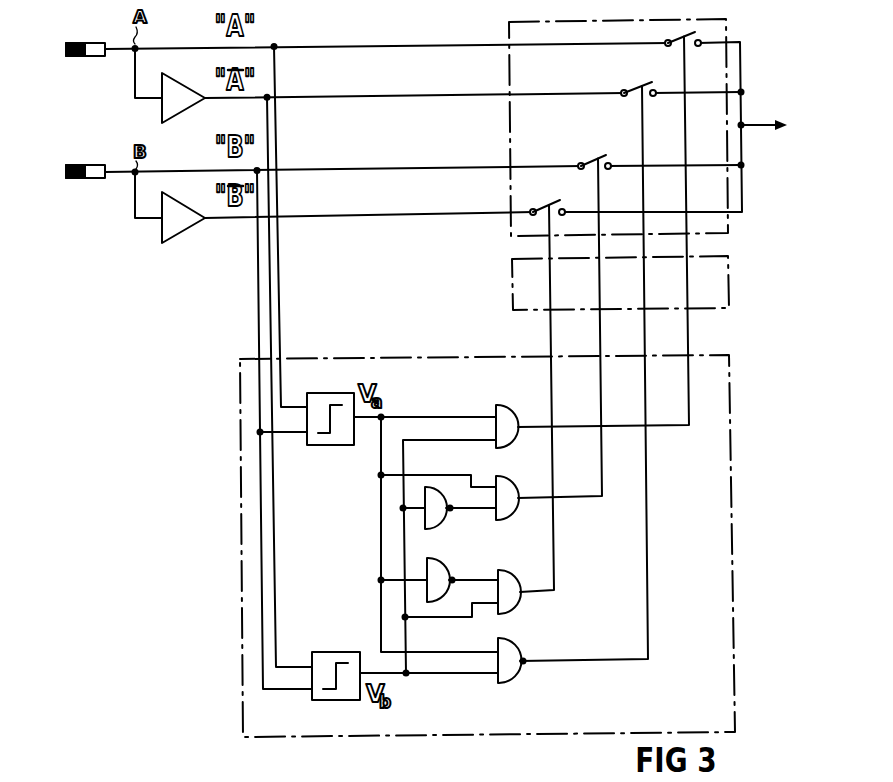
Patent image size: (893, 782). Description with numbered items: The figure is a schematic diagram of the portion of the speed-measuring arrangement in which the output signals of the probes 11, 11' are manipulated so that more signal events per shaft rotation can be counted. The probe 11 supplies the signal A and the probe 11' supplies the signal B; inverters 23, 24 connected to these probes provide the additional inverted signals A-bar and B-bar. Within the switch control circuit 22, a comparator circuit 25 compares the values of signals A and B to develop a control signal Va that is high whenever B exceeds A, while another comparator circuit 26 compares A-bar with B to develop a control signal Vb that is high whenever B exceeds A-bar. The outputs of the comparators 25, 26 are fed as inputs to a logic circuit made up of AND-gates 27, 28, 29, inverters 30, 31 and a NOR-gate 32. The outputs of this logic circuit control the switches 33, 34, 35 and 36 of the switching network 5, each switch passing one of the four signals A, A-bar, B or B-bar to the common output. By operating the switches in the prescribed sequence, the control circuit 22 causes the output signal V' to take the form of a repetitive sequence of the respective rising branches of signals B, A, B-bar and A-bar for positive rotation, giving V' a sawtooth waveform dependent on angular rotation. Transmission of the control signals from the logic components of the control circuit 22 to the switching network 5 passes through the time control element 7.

The switch 5 is at (727, 27).
The time control element 7 is at (729, 283).
The probe 11 is at (85, 72).
The probe 11' is at (85, 193).
The switch control circuit 22 is at (240, 378).
The inverter 23 is at (183, 112).
The inverter 24 is at (183, 232).
The comparator circuit 25 is at (325, 445).
The comparator circuit 26 is at (333, 652).
The AND-gate 27 is at (506, 416).
The AND-gate 28 is at (506, 496).
The AND-gate 29 is at (510, 586).
The inverter 30 is at (440, 510).
The inverter 31 is at (436, 586).
The NOR-gate 32 is at (522, 656).
The switch 33 is at (680, 36).
The switch 34 is at (640, 86).
The switch 35 is at (589, 158).
The switch 36 is at (547, 206).